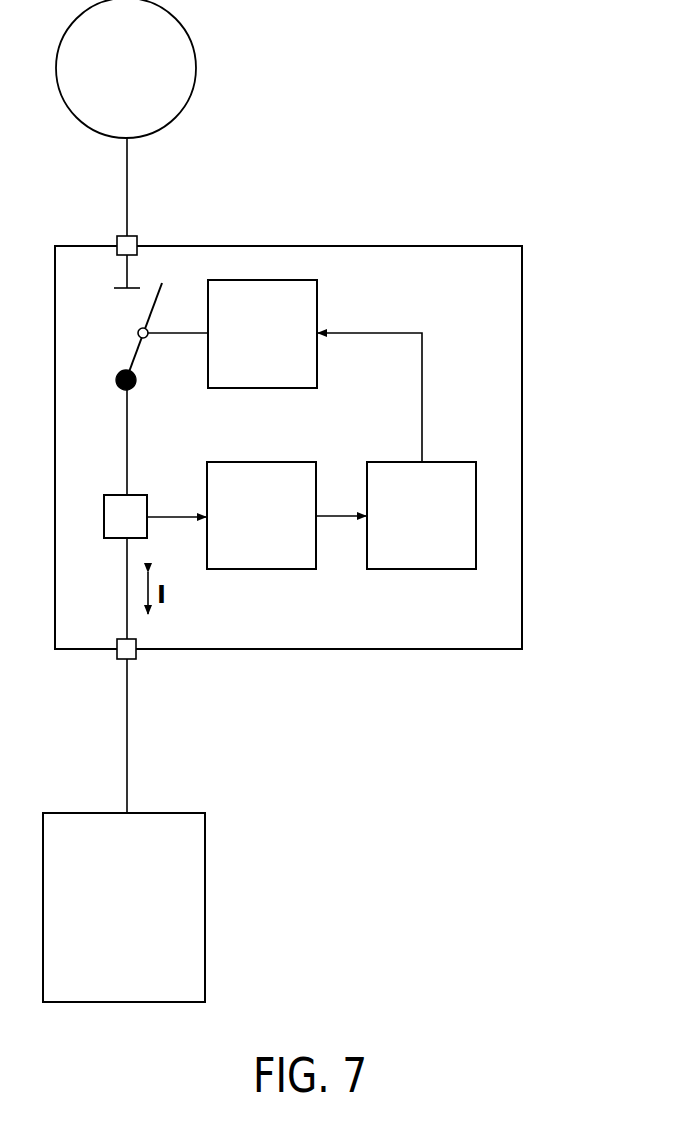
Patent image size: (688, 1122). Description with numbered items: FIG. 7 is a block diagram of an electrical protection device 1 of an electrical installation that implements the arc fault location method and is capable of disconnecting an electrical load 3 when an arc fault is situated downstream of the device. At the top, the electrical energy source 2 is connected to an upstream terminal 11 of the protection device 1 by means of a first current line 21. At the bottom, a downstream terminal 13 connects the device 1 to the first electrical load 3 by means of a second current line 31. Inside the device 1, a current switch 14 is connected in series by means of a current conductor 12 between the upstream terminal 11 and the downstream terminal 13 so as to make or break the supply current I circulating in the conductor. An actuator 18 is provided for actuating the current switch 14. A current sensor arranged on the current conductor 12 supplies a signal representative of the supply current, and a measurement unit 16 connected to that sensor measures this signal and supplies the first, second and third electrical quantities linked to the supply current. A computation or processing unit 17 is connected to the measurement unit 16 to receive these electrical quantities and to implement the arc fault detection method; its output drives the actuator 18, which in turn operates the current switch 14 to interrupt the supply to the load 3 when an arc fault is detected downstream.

The electrical protection device 1 is at (416, 246).
The electrical energy source 2 is at (190, 65).
The electrical load 3 is at (205, 930).
The upstream terminal 11 is at (117, 239).
The current conductor 12 is at (128, 430).
The downstream terminal 13 is at (118, 660).
The current switch 14 is at (135, 348).
The measurement unit 16 is at (260, 569).
The processing unit 17 is at (420, 569).
The actuator 18 is at (317, 312).
The first current line 21 is at (128, 178).
The second current line 31 is at (128, 762).